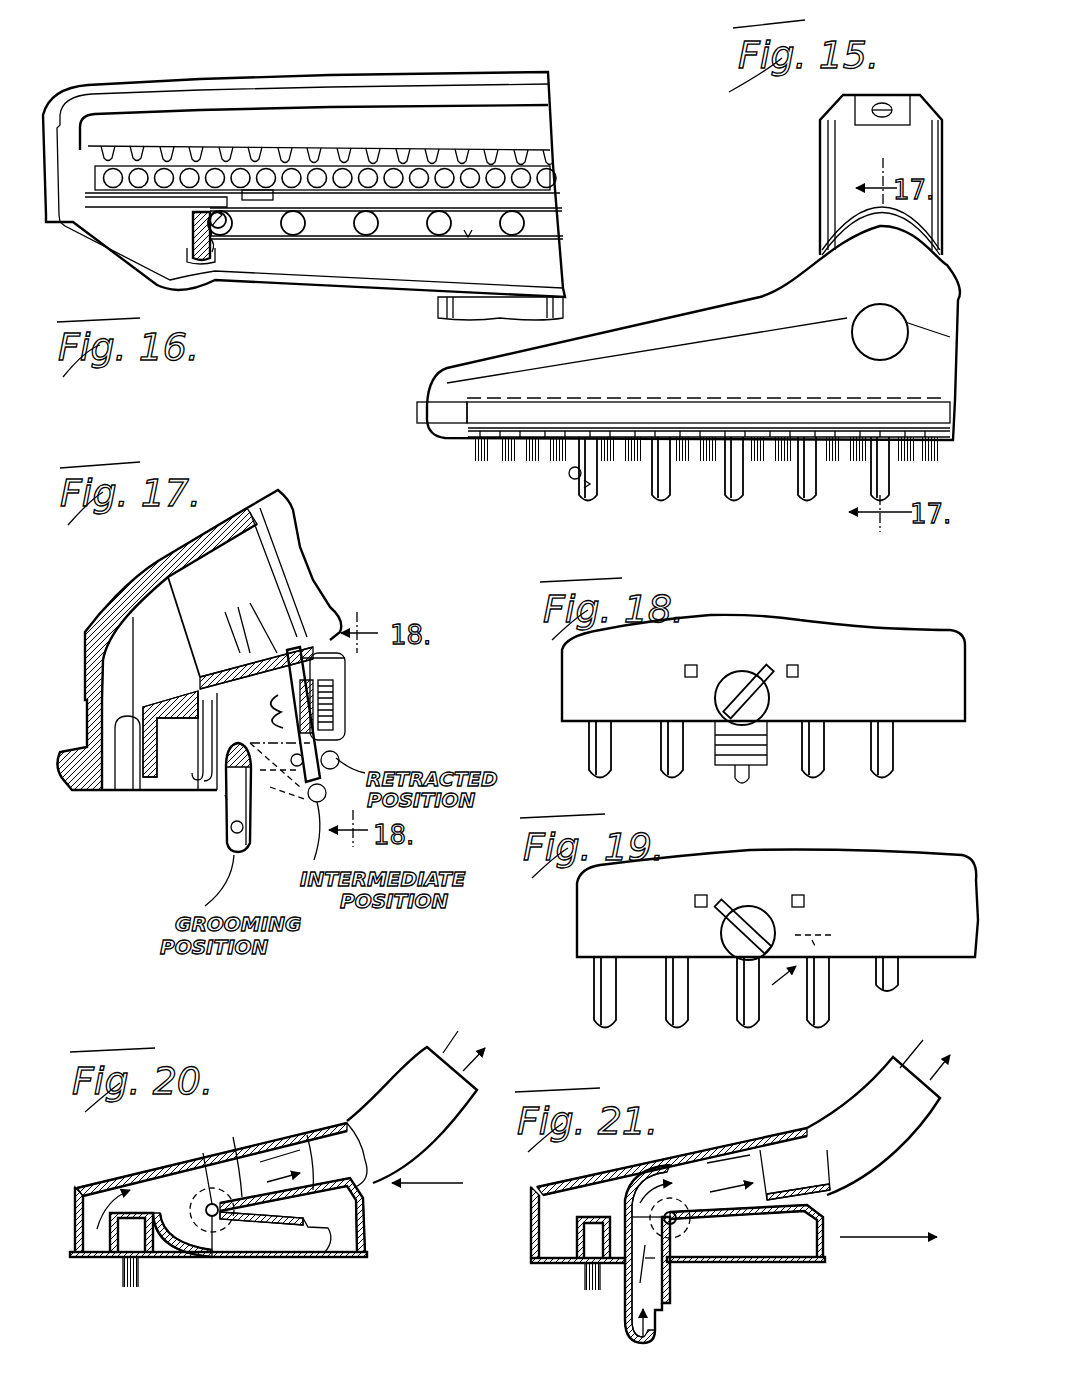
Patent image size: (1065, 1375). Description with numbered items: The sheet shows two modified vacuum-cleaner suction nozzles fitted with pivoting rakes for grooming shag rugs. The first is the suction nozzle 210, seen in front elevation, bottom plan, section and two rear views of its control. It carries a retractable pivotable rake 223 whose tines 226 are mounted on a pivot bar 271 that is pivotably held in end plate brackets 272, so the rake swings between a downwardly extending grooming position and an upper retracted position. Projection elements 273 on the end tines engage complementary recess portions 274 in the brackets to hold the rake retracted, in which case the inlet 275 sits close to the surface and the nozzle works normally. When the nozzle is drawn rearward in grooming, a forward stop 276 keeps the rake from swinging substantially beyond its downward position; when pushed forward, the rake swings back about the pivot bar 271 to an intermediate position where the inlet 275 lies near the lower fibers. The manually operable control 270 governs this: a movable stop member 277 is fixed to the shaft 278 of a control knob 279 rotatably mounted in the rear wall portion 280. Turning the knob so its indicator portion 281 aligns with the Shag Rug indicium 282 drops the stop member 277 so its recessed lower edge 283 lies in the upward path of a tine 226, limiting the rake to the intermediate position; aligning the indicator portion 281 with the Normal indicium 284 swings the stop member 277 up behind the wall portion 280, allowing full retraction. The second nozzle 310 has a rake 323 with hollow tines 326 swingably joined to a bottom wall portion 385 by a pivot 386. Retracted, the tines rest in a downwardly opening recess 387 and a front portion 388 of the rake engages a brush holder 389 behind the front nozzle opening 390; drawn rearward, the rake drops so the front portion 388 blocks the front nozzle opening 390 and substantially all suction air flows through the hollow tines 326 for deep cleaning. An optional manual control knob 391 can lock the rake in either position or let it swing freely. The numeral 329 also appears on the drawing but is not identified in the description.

In FIG. 15, the suction nozzle 210 is at (738, 297).
In FIG. 17, the suction nozzle 210 is at (153, 567).
In FIG. 16, the rake 223 is at (470, 236).
In FIG. 15, the rake 223 is at (572, 487).
In FIG. 17, the rake 223 is at (222, 814).
In FIG. 16, the tines 226 is at (205, 212).
In FIG. 15, the tines 226 is at (598, 498).
In FIG. 17, the tines 226 is at (234, 842).
In FIG. 18, the tines 226 is at (674, 764).
In FIG. 19, the tines 226 is at (680, 1012).
In FIG. 17, the manually operable control 270 is at (352, 683).
In FIG. 16, the pivot bar 271 is at (341, 234).
In FIG. 17, the pivot bar 271 is at (255, 772).
In FIG. 16, the end plate brackets 272 is at (205, 262).
In FIG. 16, the projection elements 273 is at (213, 229).
In FIG. 15, the projection elements 273 is at (568, 473).
In FIG. 16, the recess portions 274 is at (196, 242).
In FIG. 17, the recess portions 274 is at (286, 745).
In FIG. 16, the inlet 275 is at (304, 196).
In FIG. 17, the inlet 275 is at (98, 790).
In FIG. 17, the forward stop 276 is at (212, 791).
In FIG. 17, the movable stop member 277 is at (313, 748).
In FIG. 18, the movable stop member 277 is at (722, 730).
In FIG. 19, the movable stop member 277 is at (830, 935).
In FIG. 17, the shaft 278 is at (237, 615).
In FIG. 17, the control knob 279 is at (324, 699).
In FIG. 18, the control knob 279 is at (738, 682).
In FIG. 19, the control knob 279 is at (750, 916).
In FIG. 17, the rear wall portion 280 is at (311, 679).
In FIG. 19, the rear wall portion 280 is at (853, 958).
In FIG. 18, the indicator portion 281 is at (776, 756).
In FIG. 19, the indicator portion 281 is at (715, 906).
In FIG. 18, the Shag Rug indicium 282 is at (848, 655).
In FIG. 18, the recessed lower edge 283 is at (750, 770).
In FIG. 19, the Normal indicium 284 is at (612, 920).
In FIG. 20, the vacuum cleaner nozzle 310 is at (313, 1126).
In FIG. 21, the vacuum cleaner nozzle 310 is at (731, 1141).
In FIG. 20, the rake 323 is at (192, 1260).
In FIG. 20, the hollow tines 326 is at (292, 1258).
In FIG. 21, the hollow tines 326 is at (623, 1303).
In FIG. 21, the opening 329 is at (673, 1298).
In FIG. 20, the bottom wall portion 385 is at (236, 1160).
In FIG. 21, the bottom wall portion 385 is at (768, 1194).
In FIG. 20, the pivot 386 is at (203, 1158).
In FIG. 21, the pivot 386 is at (677, 1223).
In FIG. 20, the downwardly opening recess 387 is at (355, 1237).
In FIG. 21, the downwardly opening recess 387 is at (800, 1231).
In FIG. 20, the front portion 388 is at (178, 1226).
In FIG. 21, the front portion 388 is at (627, 1187).
In FIG. 20, the brush holder 389 is at (90, 1259).
In FIG. 21, the brush holder 389 is at (577, 1240).
In FIG. 20, the front nozzle opening 390 is at (80, 1212).
In FIG. 21, the front nozzle opening 390 is at (537, 1225).
In FIG. 20, the manual control knob 391 is at (221, 1240).
In FIG. 21, the manual control knob 391 is at (678, 1238).